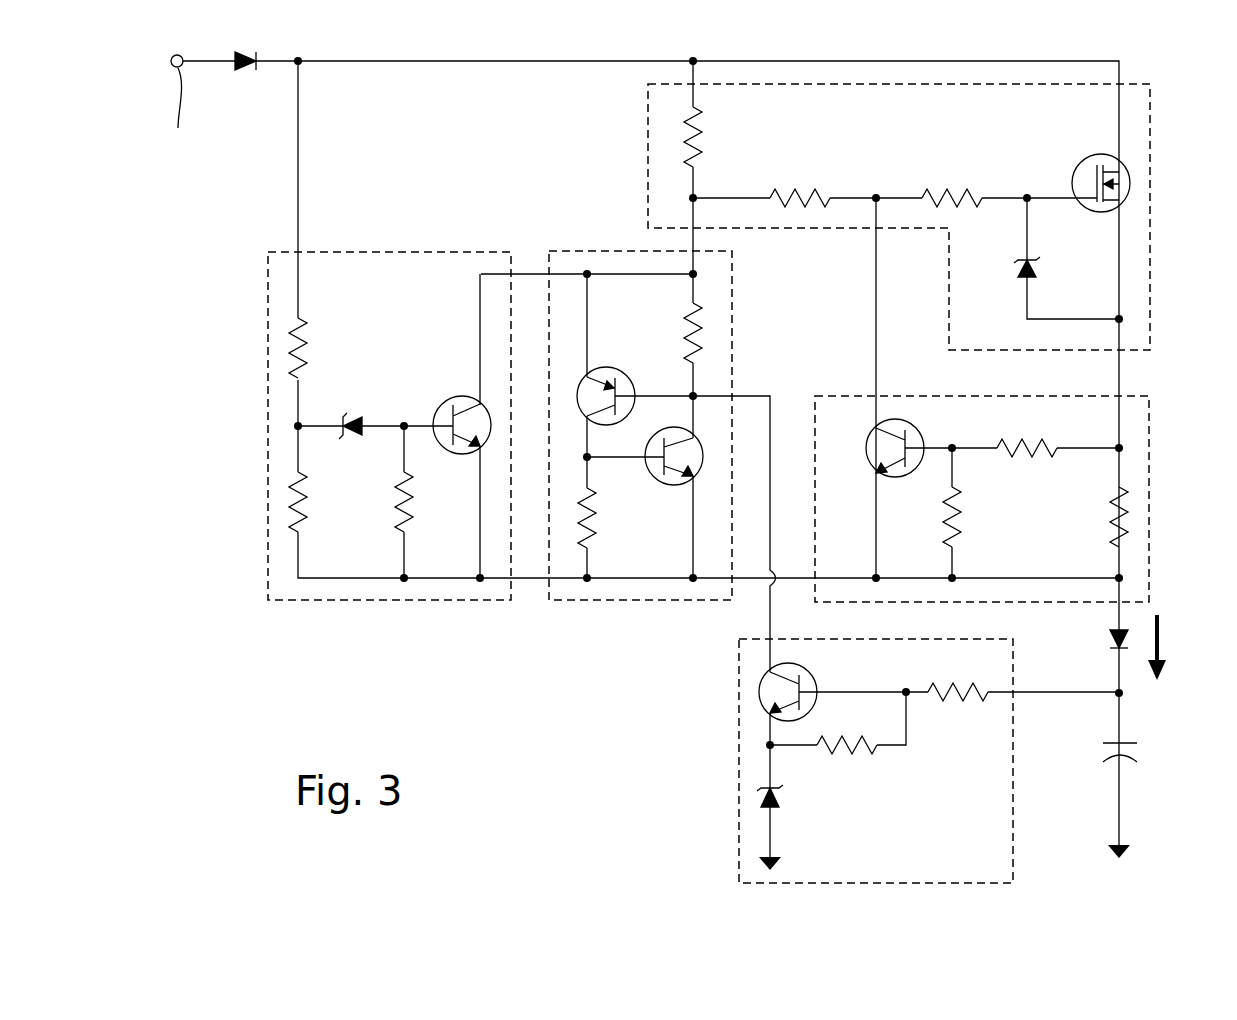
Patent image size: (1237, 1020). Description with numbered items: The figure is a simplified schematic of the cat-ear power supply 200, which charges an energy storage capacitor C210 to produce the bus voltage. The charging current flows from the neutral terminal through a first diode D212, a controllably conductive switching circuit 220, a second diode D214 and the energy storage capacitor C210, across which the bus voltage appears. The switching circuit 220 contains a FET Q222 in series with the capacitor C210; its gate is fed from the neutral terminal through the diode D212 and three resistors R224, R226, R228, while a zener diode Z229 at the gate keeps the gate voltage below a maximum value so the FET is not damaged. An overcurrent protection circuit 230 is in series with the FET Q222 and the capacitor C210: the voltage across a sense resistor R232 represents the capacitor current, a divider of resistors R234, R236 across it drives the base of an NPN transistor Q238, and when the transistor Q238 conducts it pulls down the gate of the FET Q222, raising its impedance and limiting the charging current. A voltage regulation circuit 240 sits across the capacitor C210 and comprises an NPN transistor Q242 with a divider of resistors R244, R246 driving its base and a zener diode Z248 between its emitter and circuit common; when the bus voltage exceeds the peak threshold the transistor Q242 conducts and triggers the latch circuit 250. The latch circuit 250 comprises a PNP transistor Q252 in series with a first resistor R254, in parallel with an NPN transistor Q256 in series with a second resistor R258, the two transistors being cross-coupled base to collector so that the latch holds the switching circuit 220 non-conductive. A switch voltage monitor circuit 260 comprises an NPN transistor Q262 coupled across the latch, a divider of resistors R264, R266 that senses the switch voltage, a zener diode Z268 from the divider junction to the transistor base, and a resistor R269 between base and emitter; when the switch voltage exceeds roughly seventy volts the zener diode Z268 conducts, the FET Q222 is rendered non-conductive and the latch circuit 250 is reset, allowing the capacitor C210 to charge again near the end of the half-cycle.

The cat-ear power supply 200 is at (588, 745).
The first diode D212 is at (250, 68).
The controllably conductive switching circuit 220 is at (648, 155).
The resistor R228 is at (700, 128).
The resistor R226 is at (806, 196).
The resistor R224 is at (958, 195).
The FET Q222 is at (1097, 160).
The zener diode Z229 is at (1035, 274).
The switch voltage monitor circuit 260 is at (392, 600).
The resistor R264 is at (308, 335).
The zener diode Z268 is at (346, 418).
The NPN bipolar junction transistor Q262 is at (446, 398).
The resistor R269 is at (394, 498).
The resistor R266 is at (310, 502).
The latch circuit 250 is at (695, 600).
The second resistor R258 is at (681, 327).
The first semiconductor switch (PNP bipolar junction transistor) Q252 is at (605, 369).
The second semiconductor switch (NPN bipolar junction transistor) Q256 is at (681, 483).
The first resistor R254 is at (600, 520).
The overcurrent protection circuit 230 is at (855, 396).
The NPN bipolar junction transistor Q238 is at (917, 424).
The resistor R234 is at (1020, 457).
The resistor R236 is at (943, 527).
The sense resistor R232 is at (1117, 530).
The second diode D214 is at (1108, 638).
The energy storage capacitor C210 is at (1110, 745).
The voltage regulation circuit 240 is at (739, 745).
The NPN bipolar junction transistor Q242 is at (807, 683).
The resistor R244 is at (950, 703).
The resistor R246 is at (852, 755).
The zener diode Z248 is at (778, 797).